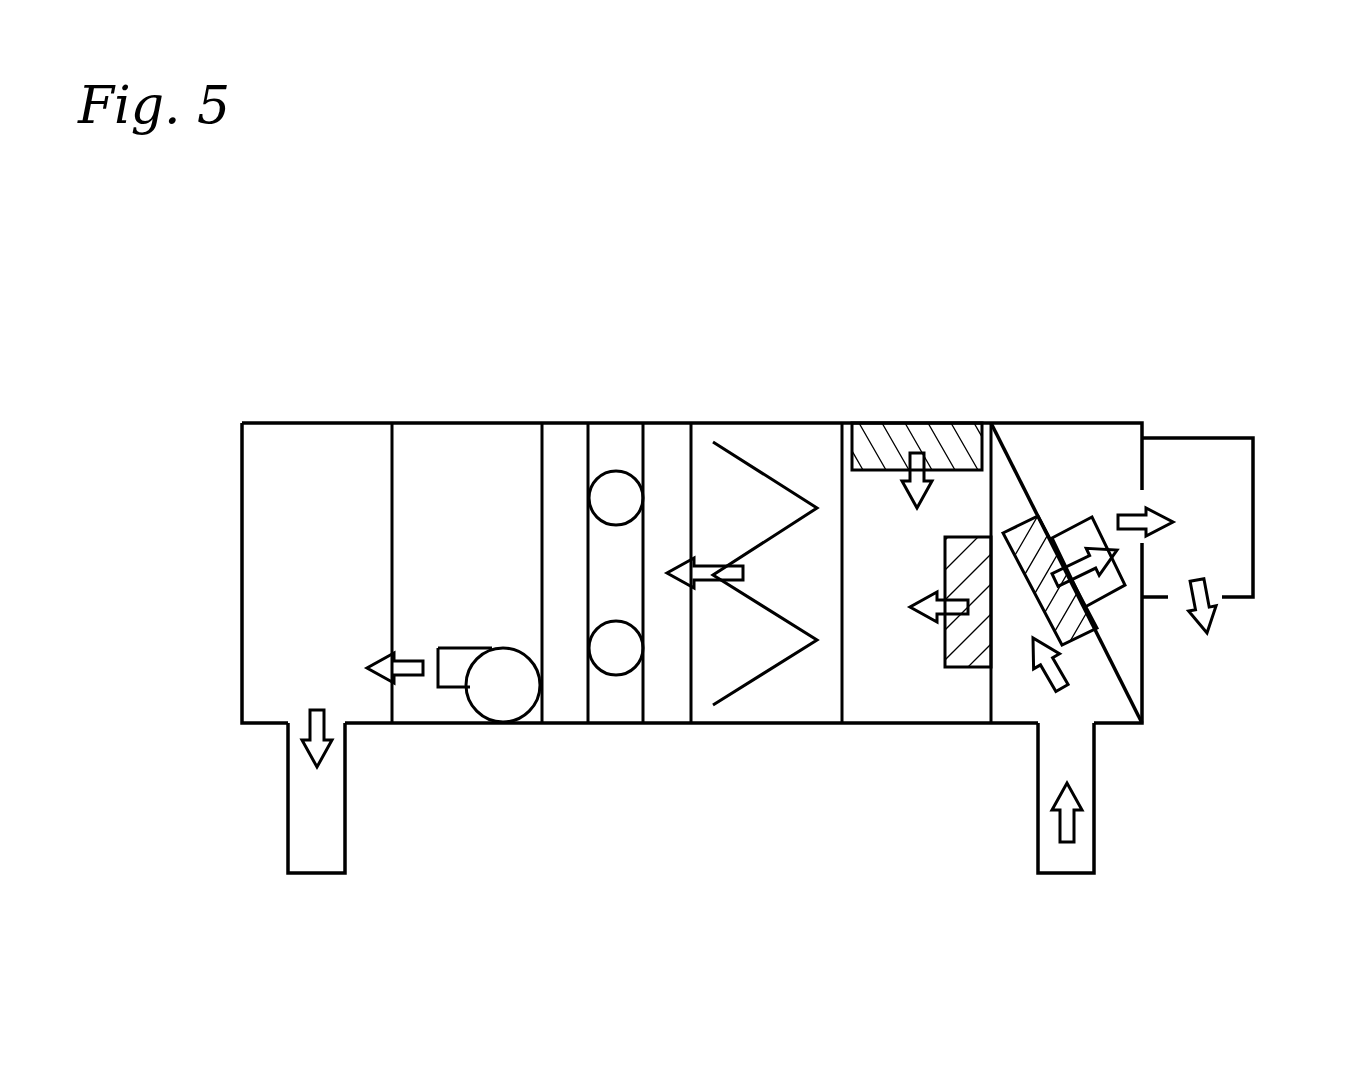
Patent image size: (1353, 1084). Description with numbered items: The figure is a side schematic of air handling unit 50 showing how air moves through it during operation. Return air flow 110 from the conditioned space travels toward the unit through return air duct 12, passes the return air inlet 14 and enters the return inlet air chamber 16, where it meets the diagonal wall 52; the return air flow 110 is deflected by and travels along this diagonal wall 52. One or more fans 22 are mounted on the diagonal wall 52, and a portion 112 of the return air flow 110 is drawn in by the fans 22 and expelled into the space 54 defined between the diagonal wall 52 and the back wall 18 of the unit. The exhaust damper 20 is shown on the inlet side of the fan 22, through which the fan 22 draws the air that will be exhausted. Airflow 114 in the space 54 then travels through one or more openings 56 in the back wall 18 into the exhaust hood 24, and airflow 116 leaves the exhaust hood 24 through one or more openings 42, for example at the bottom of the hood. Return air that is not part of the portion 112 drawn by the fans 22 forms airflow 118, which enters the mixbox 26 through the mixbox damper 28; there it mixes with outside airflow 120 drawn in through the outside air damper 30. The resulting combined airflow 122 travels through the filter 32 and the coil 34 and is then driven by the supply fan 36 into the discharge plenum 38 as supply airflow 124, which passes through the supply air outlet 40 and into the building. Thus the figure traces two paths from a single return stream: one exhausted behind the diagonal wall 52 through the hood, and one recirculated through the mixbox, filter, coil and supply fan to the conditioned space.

The air handling unit 50 is at (576, 278).
The discharge plenum 38 is at (320, 447).
The supply fan 36 is at (476, 712).
The supply airflow 124 is at (317, 708).
The supply air outlet 40 is at (307, 817).
The coil 34 is at (613, 677).
The filter 32 is at (733, 695).
The combined airflow 122 is at (679, 567).
The mixbox 26 is at (878, 690).
The outside air damper 30 is at (885, 435).
The outside airflow 120 is at (915, 445).
The mixbox damper 28 is at (965, 670).
The airflow 118 is at (932, 630).
The diagonal wall 52 is at (1010, 452).
The return air inlet 14 is at (1072, 722).
The return inlet air chamber 16 is at (1037, 693).
The space 54 is at (1060, 450).
The exhaust damper 20 is at (1067, 645).
The fan 22 is at (1100, 600).
The portion of the return air flow 112 is at (1115, 578).
The return air flow 110 is at (1062, 690).
The return air duct 12 is at (1058, 860).
The exhaust hood 24 is at (1227, 437).
The back wall 18 is at (1163, 440).
The openings 56 is at (1140, 498).
The airflow 114 is at (1162, 514).
The openings 42 is at (1218, 593).
The airflow 116 is at (1215, 633).